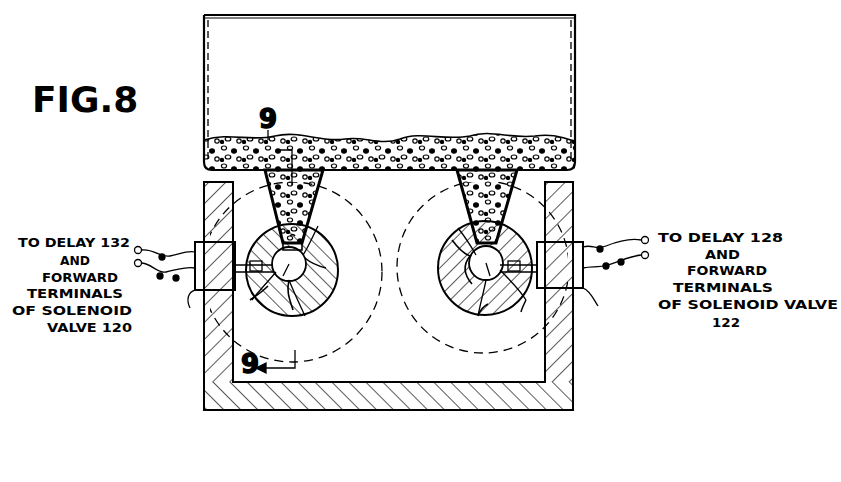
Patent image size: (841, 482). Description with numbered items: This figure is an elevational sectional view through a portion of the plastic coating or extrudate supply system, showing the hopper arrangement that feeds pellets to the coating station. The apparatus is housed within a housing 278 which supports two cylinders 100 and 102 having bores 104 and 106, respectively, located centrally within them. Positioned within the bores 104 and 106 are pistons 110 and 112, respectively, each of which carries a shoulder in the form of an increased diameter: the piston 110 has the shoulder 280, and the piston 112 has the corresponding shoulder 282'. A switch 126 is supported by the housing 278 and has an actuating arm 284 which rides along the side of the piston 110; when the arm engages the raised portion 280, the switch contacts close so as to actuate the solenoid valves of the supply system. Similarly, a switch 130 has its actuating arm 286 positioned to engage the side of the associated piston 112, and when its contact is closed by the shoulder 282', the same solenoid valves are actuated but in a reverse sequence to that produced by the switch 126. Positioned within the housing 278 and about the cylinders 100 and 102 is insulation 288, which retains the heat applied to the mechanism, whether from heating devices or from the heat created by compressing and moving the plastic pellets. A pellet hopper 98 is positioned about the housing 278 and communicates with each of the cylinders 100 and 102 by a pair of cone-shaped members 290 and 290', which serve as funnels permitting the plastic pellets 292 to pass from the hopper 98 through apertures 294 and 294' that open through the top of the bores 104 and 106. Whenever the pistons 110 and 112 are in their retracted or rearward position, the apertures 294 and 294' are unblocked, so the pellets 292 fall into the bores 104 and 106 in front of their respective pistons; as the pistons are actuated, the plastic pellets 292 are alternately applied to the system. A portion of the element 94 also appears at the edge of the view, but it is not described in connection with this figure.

The pellet hopper 98 is at (575, 95).
The plastic pellets 292 is at (401, 145).
The cone-shaped member 290 is at (453, 206).
The cone-shaped member 290' is at (324, 206).
The housing 278 is at (348, 410).
The insulation 288 is at (438, 348).
The cylinder 102 is at (321, 297).
The bore 106 is at (328, 256).
The shoulder 282' is at (336, 232).
The aperture 294' is at (319, 315).
The piston 112 is at (249, 292).
The cylinder 100 is at (445, 296).
The bore 104 is at (456, 246).
The aperture 294 is at (431, 262).
The piston 110 is at (476, 312).
The shoulder 280 is at (520, 302).
The actuating arm 286 is at (207, 243).
The switch 130 is at (167, 293).
The actuating arm 284 is at (572, 241).
The switch 126 is at (616, 281).
The frame 94 is at (776, 5).